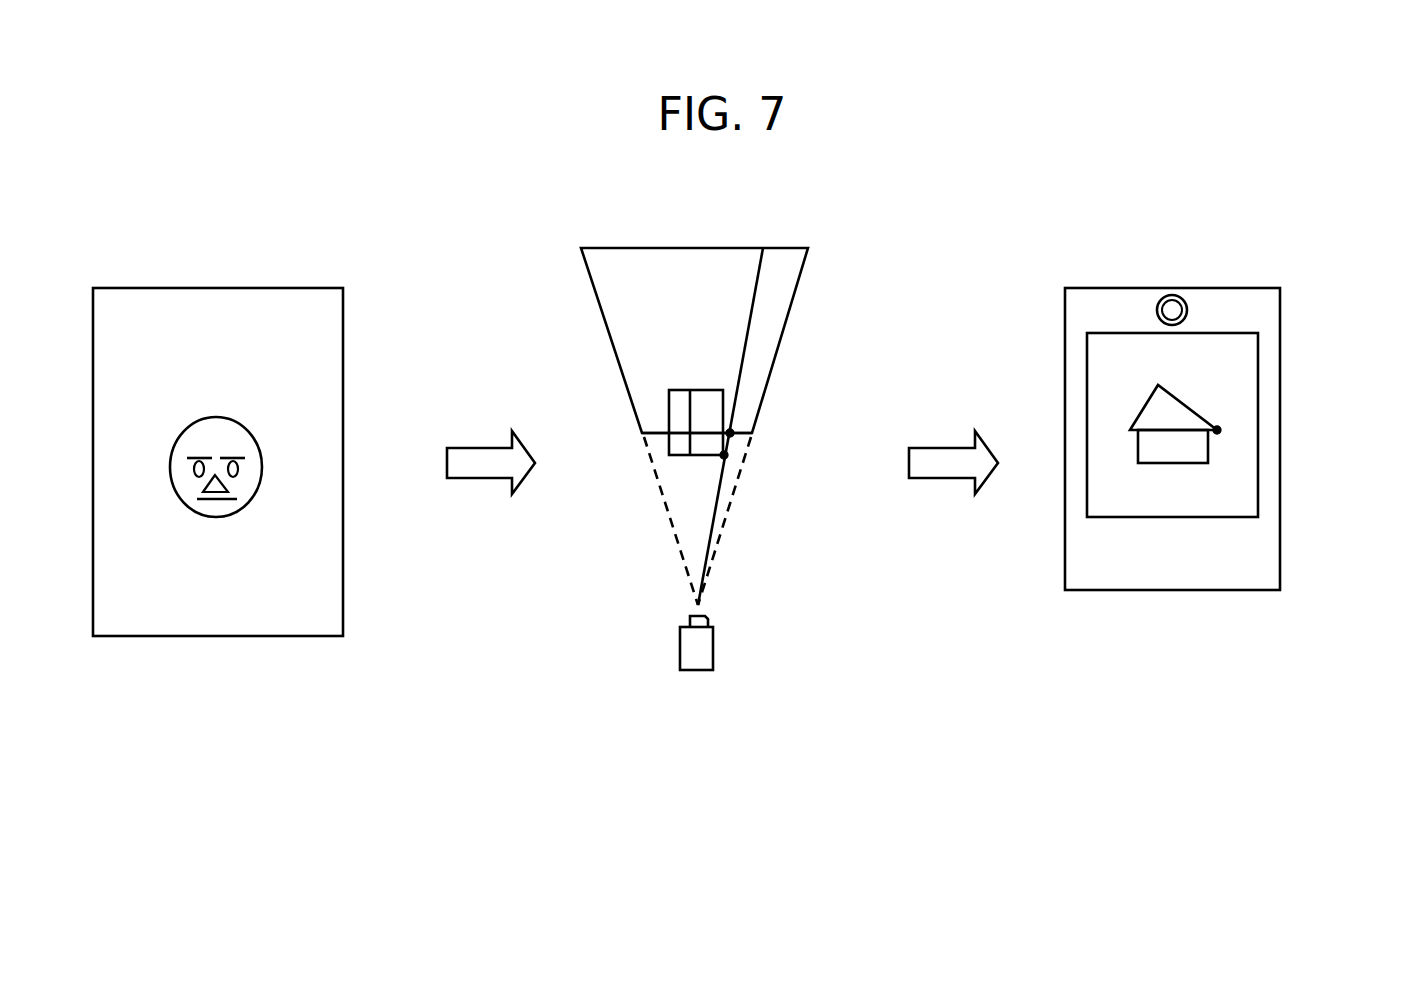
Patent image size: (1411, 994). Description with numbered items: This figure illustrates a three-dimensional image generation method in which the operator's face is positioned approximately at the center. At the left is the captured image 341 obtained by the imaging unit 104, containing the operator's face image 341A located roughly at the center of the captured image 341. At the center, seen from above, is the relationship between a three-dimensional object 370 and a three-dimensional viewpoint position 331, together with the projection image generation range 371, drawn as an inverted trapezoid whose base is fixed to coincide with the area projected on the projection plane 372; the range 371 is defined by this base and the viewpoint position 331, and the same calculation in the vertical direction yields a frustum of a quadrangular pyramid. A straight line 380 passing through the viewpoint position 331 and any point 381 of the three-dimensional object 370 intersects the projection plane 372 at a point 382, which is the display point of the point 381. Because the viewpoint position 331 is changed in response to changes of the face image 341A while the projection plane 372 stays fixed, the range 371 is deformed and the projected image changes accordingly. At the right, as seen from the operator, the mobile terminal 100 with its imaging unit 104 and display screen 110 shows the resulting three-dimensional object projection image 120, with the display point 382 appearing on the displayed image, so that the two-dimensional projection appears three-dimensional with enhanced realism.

The mobile terminal 100 is at (1270, 567).
The imaging unit 104 is at (1172, 306).
The display screen 110 is at (1238, 492).
The three-dimensional object projection image 120 is at (1173, 417).
The three-dimensional viewpoint position 331 is at (697, 660).
The captured image 341 is at (227, 625).
The operator's face image 341A is at (215, 430).
The three-dimensional object 370 is at (677, 400).
The projection image generation range 371 is at (698, 258).
The projection plane 372 is at (652, 435).
The straight line 380 is at (758, 292).
The point of the three-dimensional object 381 is at (725, 455).
The display point 382 is at (731, 433).